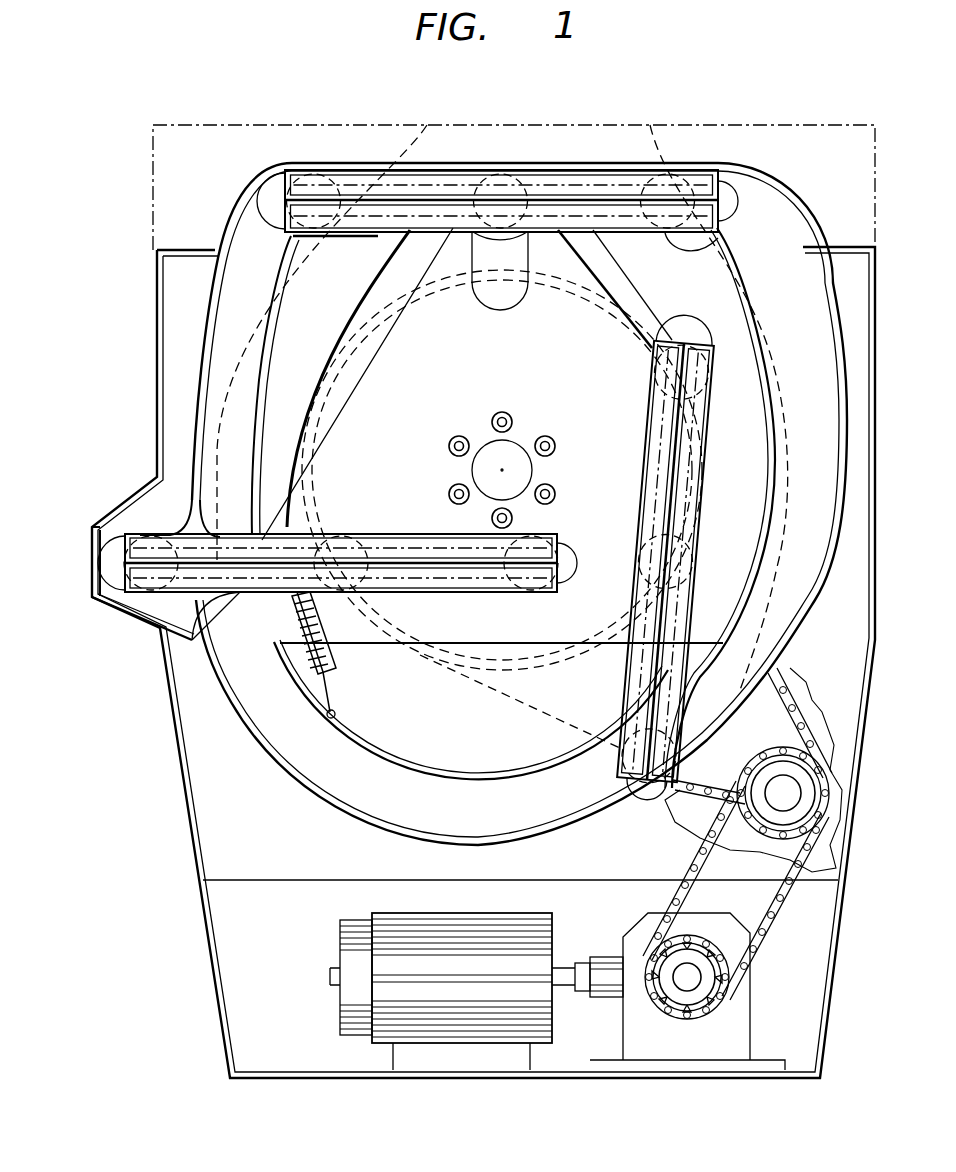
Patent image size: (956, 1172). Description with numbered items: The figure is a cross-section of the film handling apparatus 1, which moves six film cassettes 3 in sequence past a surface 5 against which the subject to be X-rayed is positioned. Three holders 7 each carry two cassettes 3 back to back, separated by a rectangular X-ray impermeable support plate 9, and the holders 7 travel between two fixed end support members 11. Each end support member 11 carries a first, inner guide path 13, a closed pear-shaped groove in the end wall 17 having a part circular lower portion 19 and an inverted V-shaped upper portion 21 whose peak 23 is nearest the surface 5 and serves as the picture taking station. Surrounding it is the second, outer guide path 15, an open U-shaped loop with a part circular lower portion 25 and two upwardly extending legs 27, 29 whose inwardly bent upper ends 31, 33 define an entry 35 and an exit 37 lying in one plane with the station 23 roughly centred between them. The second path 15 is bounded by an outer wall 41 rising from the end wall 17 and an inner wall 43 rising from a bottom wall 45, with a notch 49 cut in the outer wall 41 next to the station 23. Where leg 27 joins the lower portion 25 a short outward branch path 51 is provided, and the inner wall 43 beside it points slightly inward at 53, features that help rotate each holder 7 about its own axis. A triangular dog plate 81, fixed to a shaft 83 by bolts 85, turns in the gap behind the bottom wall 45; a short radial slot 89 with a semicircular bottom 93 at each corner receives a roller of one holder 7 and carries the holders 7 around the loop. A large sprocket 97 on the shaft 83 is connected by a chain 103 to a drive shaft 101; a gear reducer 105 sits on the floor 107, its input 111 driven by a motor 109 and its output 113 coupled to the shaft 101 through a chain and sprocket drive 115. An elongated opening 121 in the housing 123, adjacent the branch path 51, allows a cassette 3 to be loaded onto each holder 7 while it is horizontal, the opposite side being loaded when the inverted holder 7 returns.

The film handling apparatus 1 is at (136, 978).
The film cassettes 3 is at (372, 168).
The surface 5 is at (712, 126).
The holders 7 is at (455, 247).
The support plate 9 is at (322, 250).
The end support members 11 is at (300, 346).
The first, inner guide path 13 is at (450, 690).
The second, outer guide path 15 is at (237, 178).
The end wall 17 is at (297, 310).
The part circular lower portion 19 is at (502, 490).
The inverted V-shaped upper portion 21 is at (365, 286).
The peak / picture taking station 23 is at (484, 236).
The part circular lower portion 25 is at (433, 818).
The leg 27 is at (212, 376).
The leg 29 is at (808, 432).
The upper end 31 is at (313, 253).
The upper end 33 is at (710, 245).
The entry 35 is at (435, 104).
The exit 37 is at (708, 390).
The outer wall 41 is at (237, 730).
The inner wall 43 is at (363, 754).
The bottom wall 45 is at (283, 744).
The notch 49 is at (528, 165).
The branch path 51 is at (142, 522).
The pointed portion of inner wall 53 is at (242, 533).
The dog plate 81 is at (330, 423).
The shaft 83 is at (497, 458).
The bolts 85 is at (545, 436).
The slots 89 is at (512, 268).
The slot bottom 93 is at (505, 308).
The large sprocket 97 is at (610, 635).
The drive shaft 101 is at (802, 803).
The chain 103 is at (800, 697).
The gear reducer 105 is at (752, 996).
The floor 107 is at (796, 1072).
The motor 109 is at (478, 913).
The input 111 is at (605, 957).
The output 113 is at (678, 990).
The chain and sprocket drive 115 is at (818, 918).
The elongated opening 121 is at (92, 592).
The housing 123 is at (158, 398).